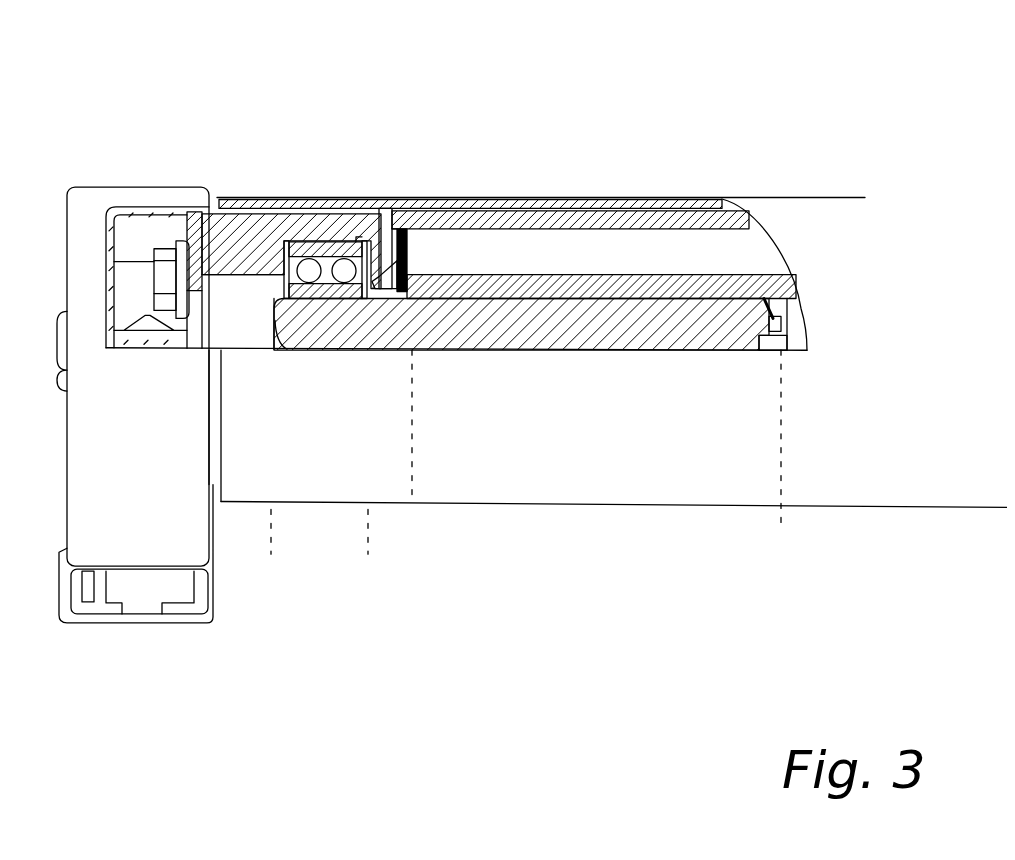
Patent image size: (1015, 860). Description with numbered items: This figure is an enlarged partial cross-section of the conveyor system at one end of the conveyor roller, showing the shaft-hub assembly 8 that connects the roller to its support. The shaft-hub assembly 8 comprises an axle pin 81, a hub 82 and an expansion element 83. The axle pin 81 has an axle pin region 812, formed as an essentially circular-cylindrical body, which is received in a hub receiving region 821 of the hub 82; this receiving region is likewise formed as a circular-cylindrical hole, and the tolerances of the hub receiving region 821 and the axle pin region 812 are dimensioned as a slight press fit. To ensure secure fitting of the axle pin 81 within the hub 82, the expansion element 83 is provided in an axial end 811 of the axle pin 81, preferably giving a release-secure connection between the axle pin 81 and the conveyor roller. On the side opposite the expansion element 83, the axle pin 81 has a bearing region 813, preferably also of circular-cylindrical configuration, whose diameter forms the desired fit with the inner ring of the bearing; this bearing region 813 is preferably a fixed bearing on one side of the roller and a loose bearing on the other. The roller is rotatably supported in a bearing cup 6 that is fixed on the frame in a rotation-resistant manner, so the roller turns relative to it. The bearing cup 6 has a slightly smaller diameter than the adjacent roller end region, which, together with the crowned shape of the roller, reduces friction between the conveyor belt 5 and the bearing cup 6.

The conveyor belt 5 is at (702, 198).
The bearing cup 6 is at (251, 246).
The shaft-hub assembly 8 is at (542, 177).
The axle pin 81 is at (599, 328).
The axial end 811 is at (767, 353).
The axle pin region 812 is at (774, 530).
The bearing region 813 is at (370, 558).
The hub 82 is at (475, 270).
The hub receiving region 821 is at (601, 461).
The expansion element 83 is at (774, 322).